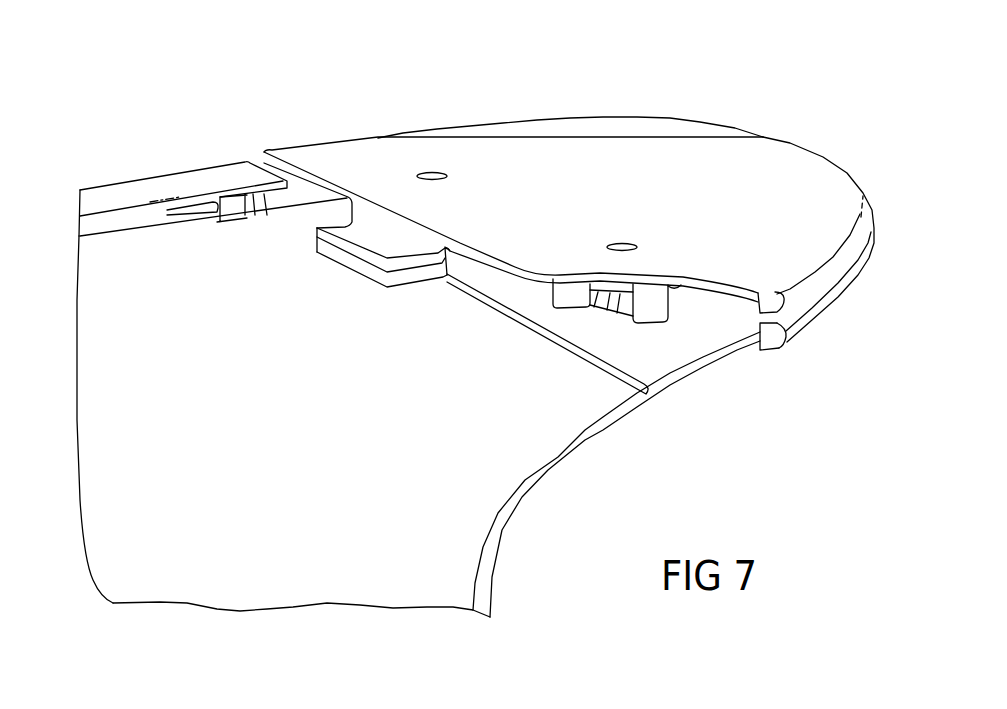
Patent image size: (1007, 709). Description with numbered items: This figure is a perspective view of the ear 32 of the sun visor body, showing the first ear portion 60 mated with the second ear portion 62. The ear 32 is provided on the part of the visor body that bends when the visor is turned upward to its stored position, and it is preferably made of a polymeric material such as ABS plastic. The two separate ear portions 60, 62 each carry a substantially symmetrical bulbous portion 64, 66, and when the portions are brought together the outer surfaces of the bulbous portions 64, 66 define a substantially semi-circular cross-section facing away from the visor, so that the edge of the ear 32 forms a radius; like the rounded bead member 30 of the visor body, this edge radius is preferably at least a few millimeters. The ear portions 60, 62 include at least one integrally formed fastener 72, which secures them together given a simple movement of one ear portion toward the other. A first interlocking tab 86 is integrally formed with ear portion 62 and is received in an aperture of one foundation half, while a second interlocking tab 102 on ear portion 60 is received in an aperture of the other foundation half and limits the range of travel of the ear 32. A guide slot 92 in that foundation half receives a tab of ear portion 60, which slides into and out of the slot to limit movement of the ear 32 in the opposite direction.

The rounded bead member 30 is at (152, 168).
The ear 32 is at (668, 106).
The ear portion 60 is at (800, 177).
The ear portion 62 is at (760, 355).
The bulbous portion 64 is at (771, 300).
The bulbous portion 66 is at (780, 342).
The fastener 72 is at (612, 305).
The first interlocking tab 86 is at (397, 284).
The guide slot 92 is at (563, 295).
The second interlocking tab 102 is at (367, 238).